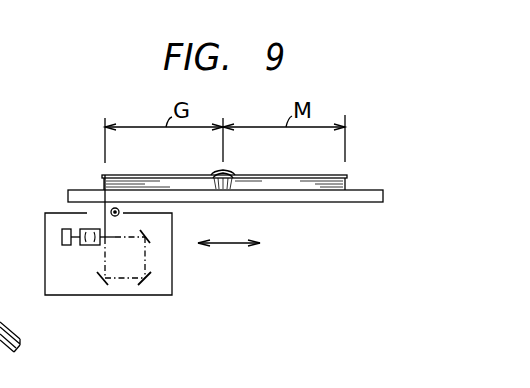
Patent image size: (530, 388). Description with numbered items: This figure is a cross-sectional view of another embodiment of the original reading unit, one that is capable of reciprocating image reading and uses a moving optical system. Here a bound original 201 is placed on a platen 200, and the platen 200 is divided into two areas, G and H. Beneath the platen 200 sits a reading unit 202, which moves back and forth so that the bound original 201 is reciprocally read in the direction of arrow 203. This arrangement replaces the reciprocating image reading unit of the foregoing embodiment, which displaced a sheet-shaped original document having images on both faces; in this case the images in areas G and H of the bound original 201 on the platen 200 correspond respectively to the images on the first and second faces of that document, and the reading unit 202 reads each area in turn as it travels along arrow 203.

The platen 200 is at (362, 202).
The bound original 201 is at (280, 182).
The reading unit 202 is at (138, 295).
The arrow 203 is at (228, 245).